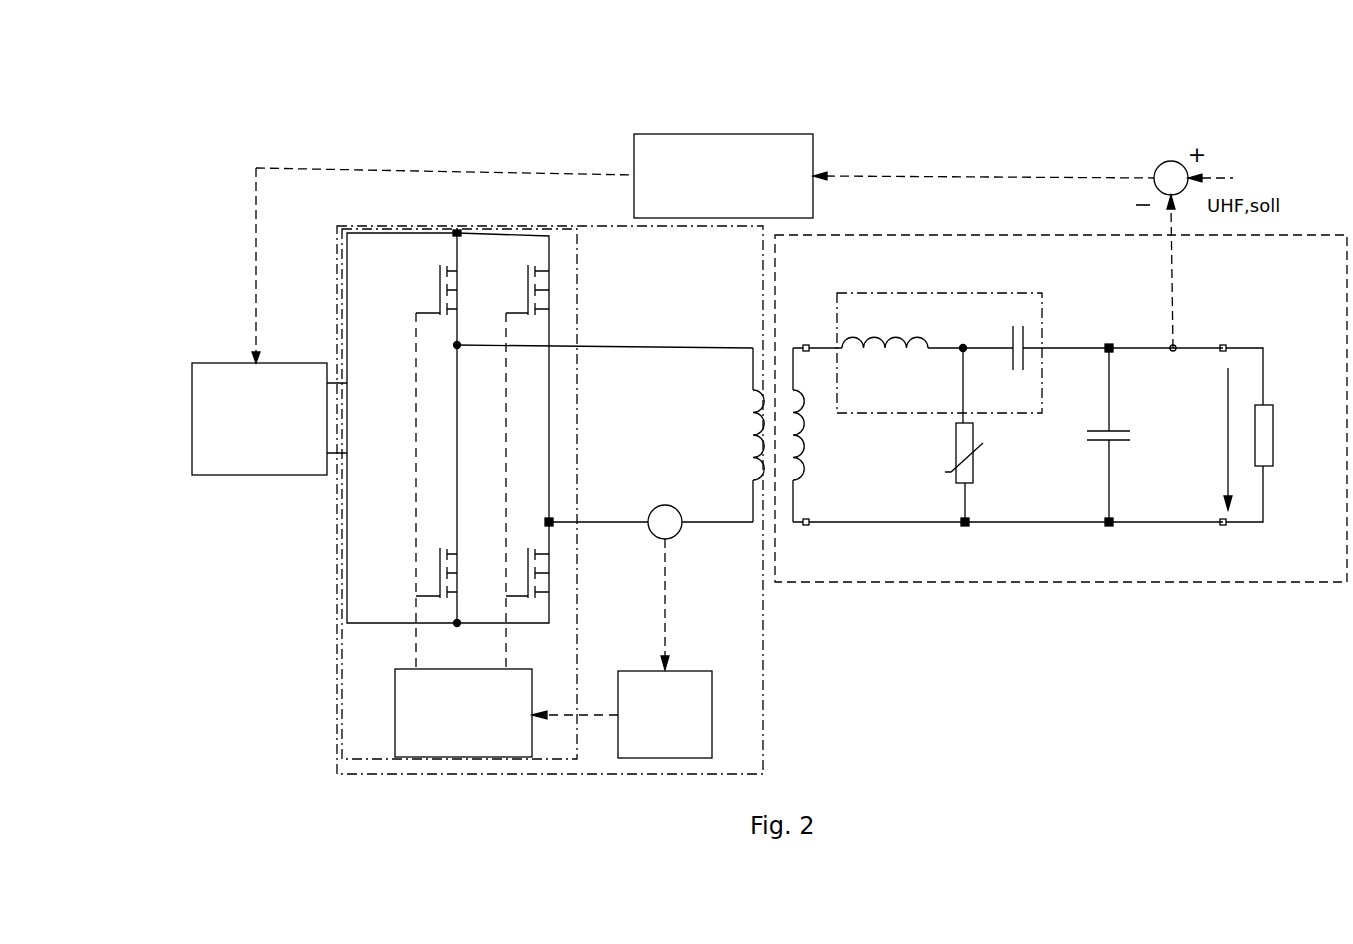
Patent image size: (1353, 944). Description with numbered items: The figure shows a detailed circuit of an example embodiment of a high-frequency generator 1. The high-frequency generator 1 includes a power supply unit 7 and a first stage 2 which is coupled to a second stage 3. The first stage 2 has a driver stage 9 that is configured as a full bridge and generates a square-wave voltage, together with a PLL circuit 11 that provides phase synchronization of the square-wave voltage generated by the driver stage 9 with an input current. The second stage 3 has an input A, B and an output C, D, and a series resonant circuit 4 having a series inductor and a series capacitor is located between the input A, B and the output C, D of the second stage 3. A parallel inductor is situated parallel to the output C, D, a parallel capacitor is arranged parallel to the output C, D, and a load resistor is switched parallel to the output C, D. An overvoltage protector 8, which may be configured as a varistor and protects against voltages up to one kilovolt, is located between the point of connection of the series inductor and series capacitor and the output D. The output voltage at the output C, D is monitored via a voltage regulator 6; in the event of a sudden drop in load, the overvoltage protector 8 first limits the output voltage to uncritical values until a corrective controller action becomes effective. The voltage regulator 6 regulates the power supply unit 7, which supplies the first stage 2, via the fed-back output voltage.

The high-frequency generator 1 is at (294, 105).
The first stage 2 is at (430, 226).
The second stage 3 is at (1061, 377).
The series resonant circuit 4 is at (927, 293).
The voltage regulator 6 is at (745, 134).
The power supply unit 7 is at (192, 410).
The overvoltage protector 8 is at (977, 473).
The driver stage 9 is at (572, 297).
The PLL circuit 11 is at (712, 717).